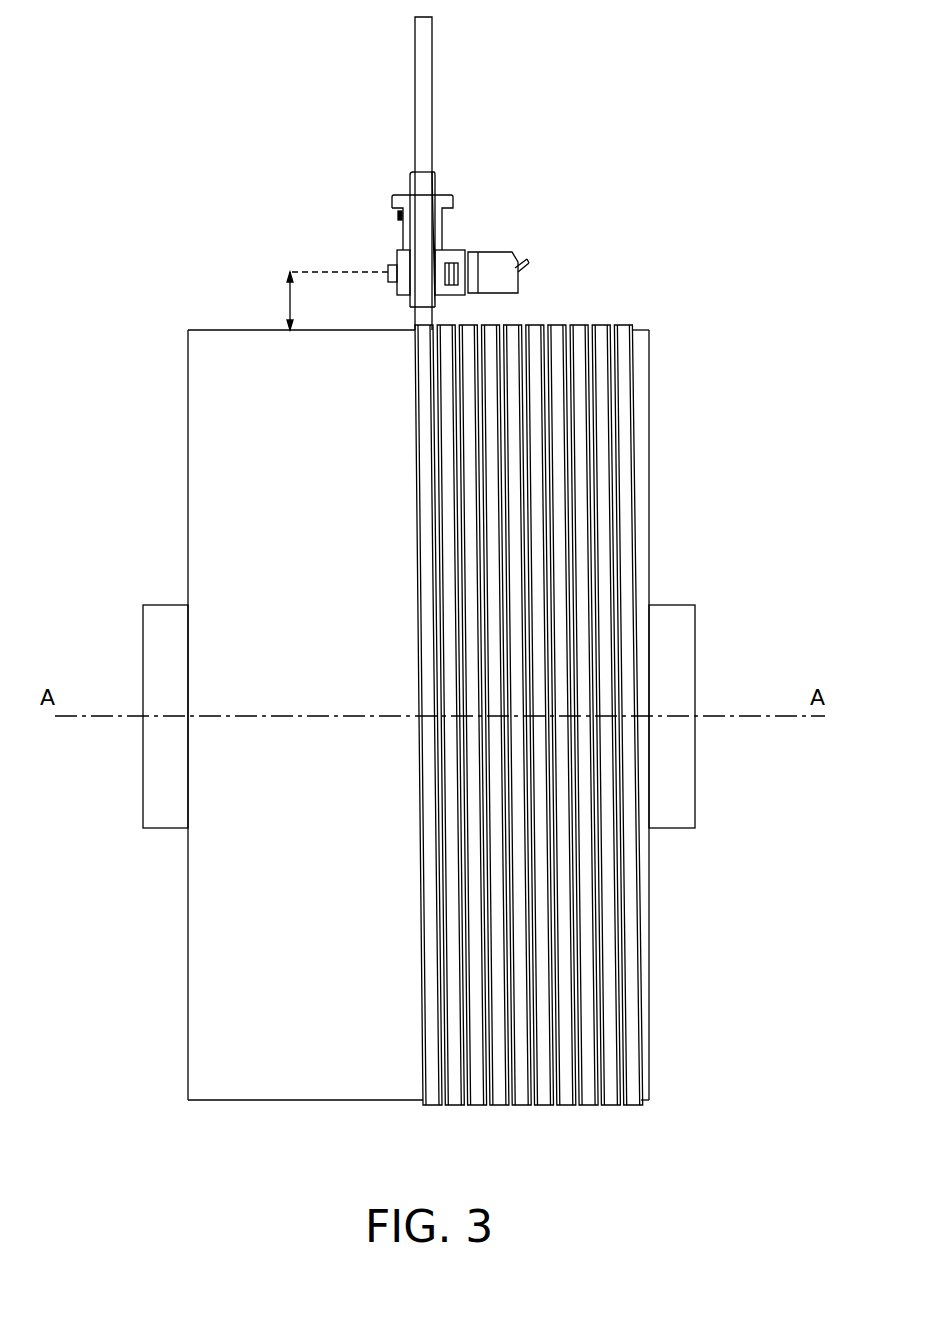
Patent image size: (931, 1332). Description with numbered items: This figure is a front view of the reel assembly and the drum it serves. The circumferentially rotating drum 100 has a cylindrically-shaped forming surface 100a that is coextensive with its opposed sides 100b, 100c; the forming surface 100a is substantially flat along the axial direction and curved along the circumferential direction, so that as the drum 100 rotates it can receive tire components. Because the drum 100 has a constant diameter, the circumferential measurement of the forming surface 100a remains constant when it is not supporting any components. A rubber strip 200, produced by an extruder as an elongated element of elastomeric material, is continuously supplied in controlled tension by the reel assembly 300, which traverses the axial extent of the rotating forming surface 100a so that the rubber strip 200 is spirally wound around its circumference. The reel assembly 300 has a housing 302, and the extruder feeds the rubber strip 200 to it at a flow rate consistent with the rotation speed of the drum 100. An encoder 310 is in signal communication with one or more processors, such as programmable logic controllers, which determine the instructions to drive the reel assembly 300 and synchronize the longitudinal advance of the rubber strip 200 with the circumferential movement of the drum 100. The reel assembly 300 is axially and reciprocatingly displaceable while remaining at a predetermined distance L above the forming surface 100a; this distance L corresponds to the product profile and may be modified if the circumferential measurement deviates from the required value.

The drum 100 is at (422, 715).
The forming surface 100a is at (330, 546).
The side 100b is at (188, 470).
The side 100c is at (652, 445).
The rubber strip 200 is at (415, 50).
The reel assembly 300 is at (509, 200).
The housing 302 is at (450, 200).
The encoder 310 is at (505, 280).
The predetermined distance L is at (328, 301).